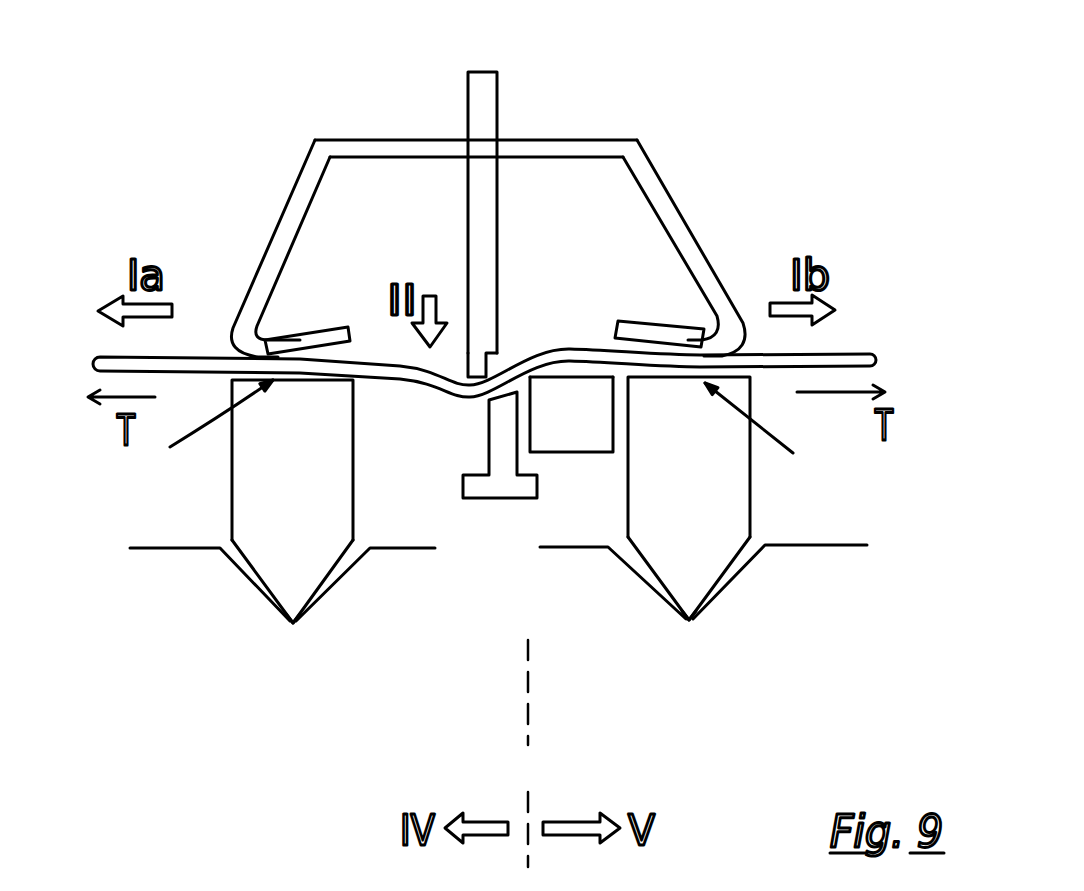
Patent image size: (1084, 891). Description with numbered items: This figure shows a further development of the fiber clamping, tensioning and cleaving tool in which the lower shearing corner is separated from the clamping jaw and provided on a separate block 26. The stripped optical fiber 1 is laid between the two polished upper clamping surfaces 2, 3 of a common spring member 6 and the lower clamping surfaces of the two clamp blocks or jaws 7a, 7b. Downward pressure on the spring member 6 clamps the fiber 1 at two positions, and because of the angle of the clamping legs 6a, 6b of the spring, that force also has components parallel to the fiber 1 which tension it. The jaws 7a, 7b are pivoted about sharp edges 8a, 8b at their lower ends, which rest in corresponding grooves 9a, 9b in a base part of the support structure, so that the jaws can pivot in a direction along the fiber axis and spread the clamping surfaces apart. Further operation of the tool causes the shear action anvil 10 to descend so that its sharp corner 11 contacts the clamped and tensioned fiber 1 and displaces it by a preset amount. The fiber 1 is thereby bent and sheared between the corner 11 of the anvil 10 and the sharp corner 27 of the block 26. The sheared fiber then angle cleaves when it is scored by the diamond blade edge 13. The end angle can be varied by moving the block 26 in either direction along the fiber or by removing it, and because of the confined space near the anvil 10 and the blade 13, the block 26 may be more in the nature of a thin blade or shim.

The optical fiber 1 is at (843, 350).
The upper clamping surface 2 is at (292, 340).
The upper clamping surface 3 is at (687, 340).
The spring member 6 is at (503, 211).
The clamping leg 6a is at (300, 198).
The clamping leg 6b is at (685, 230).
The clamp block 7a is at (259, 558).
The clamp block 7b is at (742, 555).
The sharp edge 8a is at (292, 612).
The sharp edge 8b is at (687, 605).
The groove 9a is at (293, 637).
The groove 9b is at (688, 632).
The shear action anvil 10 is at (465, 190).
The sharp corner 11 is at (470, 347).
The diamond blade edge 13 is at (502, 395).
The block 26 is at (543, 586).
The sharp corner 27 is at (535, 383).